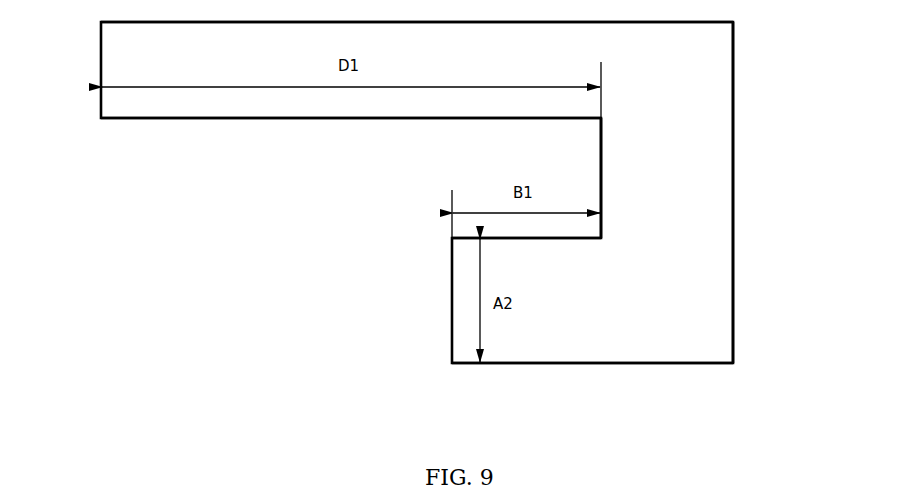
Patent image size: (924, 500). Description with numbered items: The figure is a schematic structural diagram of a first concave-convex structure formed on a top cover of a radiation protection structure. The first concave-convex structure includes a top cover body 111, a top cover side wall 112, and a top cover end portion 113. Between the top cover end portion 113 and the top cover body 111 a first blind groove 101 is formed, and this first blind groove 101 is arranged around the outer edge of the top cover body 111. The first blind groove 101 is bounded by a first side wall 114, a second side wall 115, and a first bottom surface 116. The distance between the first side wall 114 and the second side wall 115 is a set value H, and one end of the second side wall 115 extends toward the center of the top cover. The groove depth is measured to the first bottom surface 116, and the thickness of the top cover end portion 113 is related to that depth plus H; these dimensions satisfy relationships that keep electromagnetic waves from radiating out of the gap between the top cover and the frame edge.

The first blind groove 101 is at (527, 167).
The top cover body 111 is at (413, 68).
The top cover side wall 112 is at (653, 200).
The top cover end portion 113 is at (532, 323).
The first side wall 114 is at (290, 118).
The second side wall 115 is at (520, 241).
The first bottom surface 116 is at (602, 137).